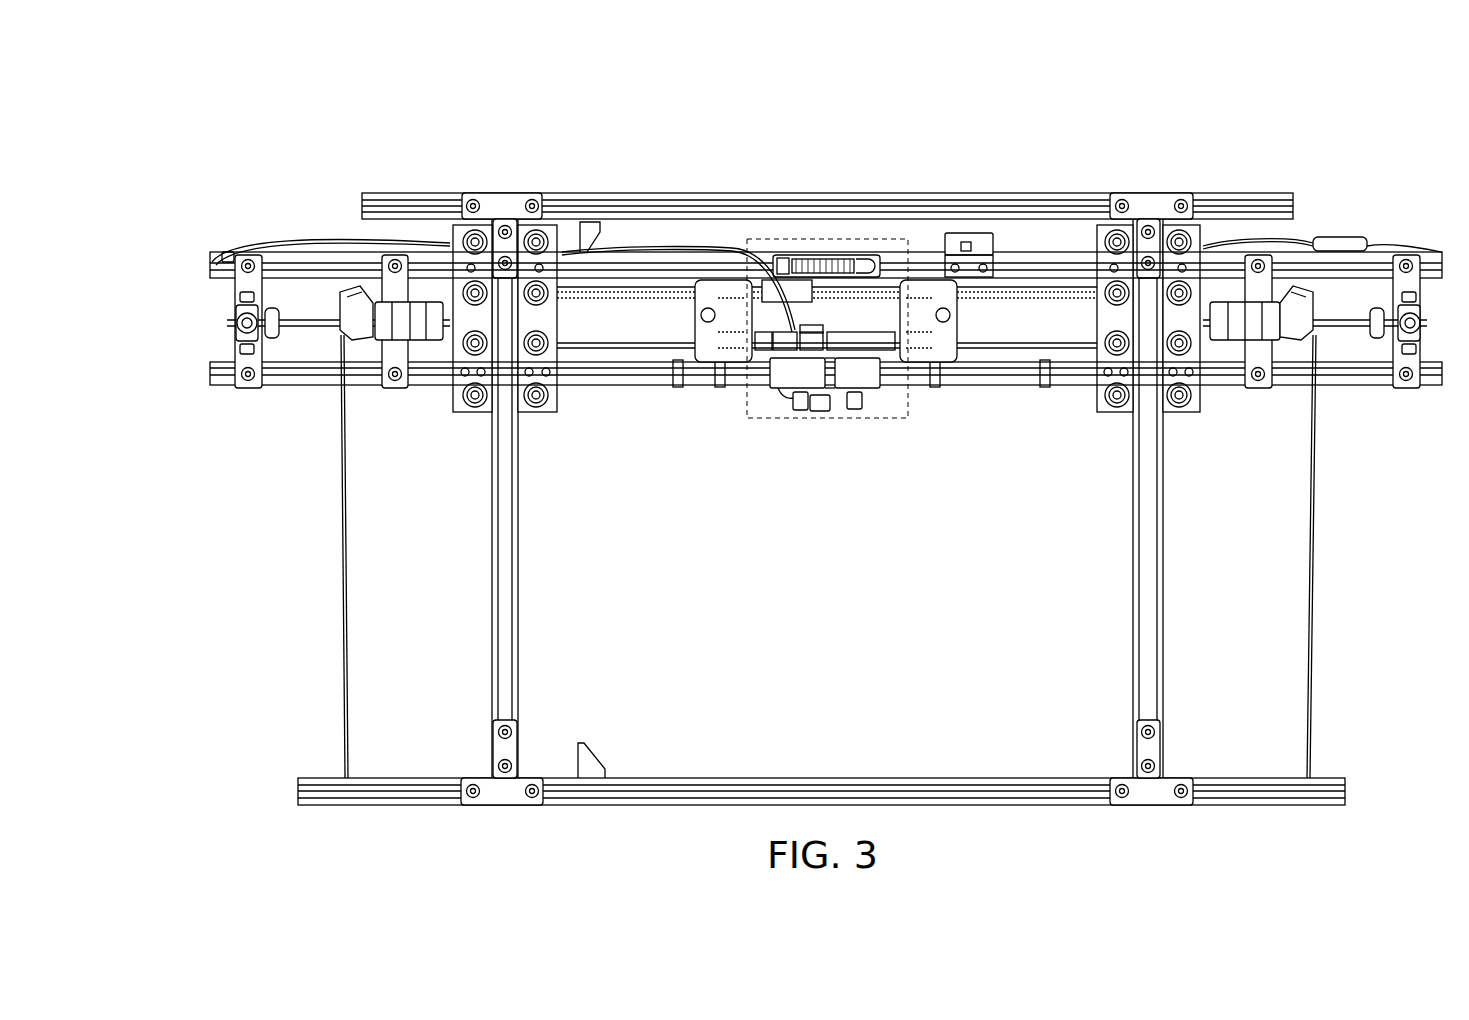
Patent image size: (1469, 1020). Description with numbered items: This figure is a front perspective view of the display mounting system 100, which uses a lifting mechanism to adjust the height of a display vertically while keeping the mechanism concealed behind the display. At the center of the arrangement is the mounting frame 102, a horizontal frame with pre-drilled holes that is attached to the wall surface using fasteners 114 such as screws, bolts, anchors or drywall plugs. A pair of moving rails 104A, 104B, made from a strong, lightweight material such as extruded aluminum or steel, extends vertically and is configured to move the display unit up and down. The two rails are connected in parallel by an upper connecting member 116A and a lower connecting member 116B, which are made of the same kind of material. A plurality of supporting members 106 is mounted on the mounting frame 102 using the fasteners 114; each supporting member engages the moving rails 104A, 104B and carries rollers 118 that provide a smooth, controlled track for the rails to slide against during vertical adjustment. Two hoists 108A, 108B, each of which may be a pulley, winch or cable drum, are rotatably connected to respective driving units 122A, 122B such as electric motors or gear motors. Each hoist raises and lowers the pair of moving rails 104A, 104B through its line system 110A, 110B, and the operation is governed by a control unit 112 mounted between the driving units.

The display mounting system 100 is at (472, 92).
The mounting frame 102 is at (210, 377).
The moving rail 104A is at (492, 650).
The moving rail 104B is at (1163, 517).
The supporting member 106 is at (549, 262).
The hoist 108A is at (307, 340).
The hoist 108B is at (1345, 335).
The line system 110A is at (342, 514).
The line system 110B is at (1312, 604).
The control unit 112 is at (834, 240).
The fastener 114 is at (1398, 258).
The upper connecting member 116A is at (955, 193).
The lower connecting member 116B is at (298, 795).
The roller 118 is at (483, 224).
The driving unit 122A is at (668, 318).
The driving unit 122B is at (1047, 320).